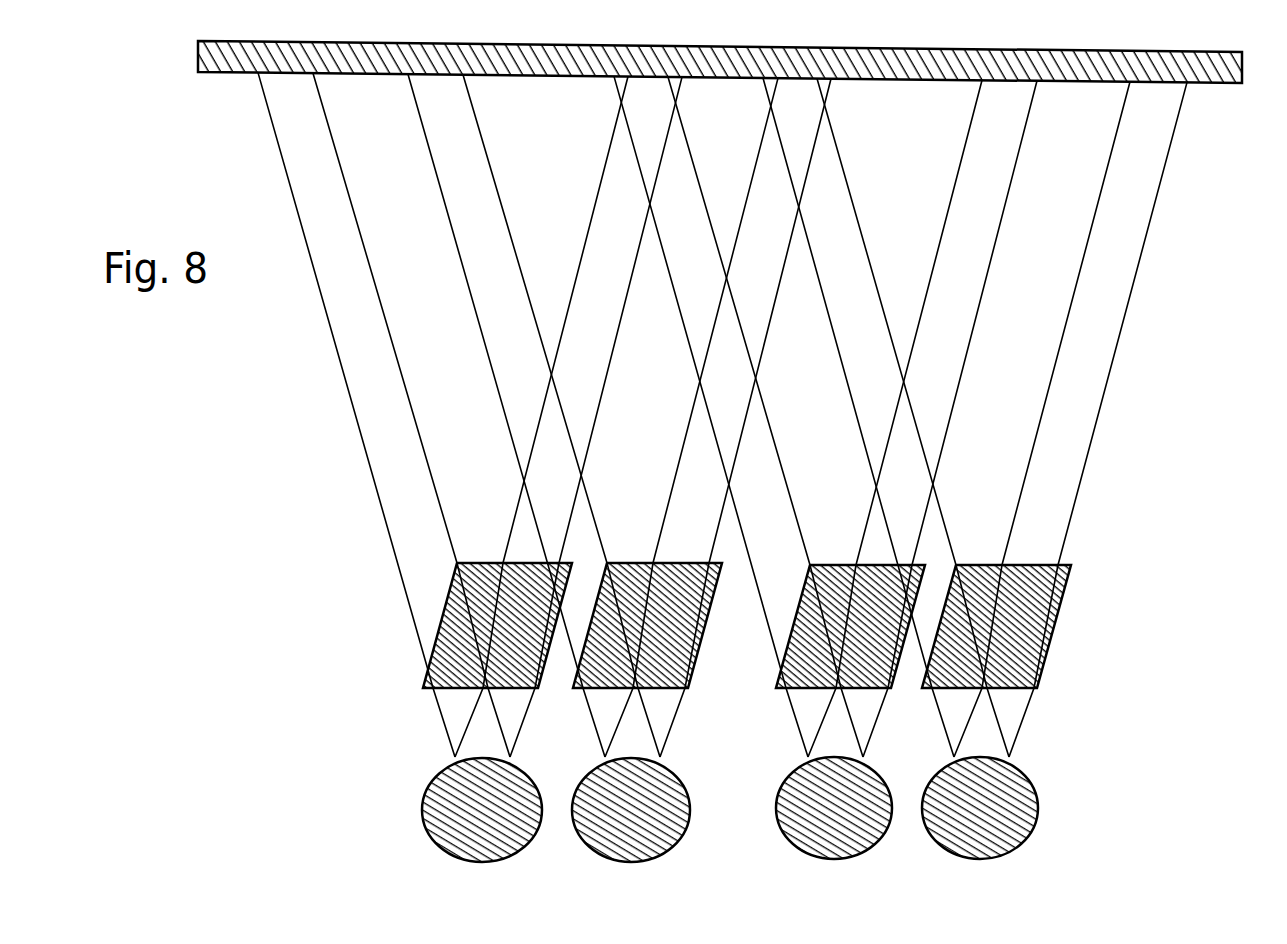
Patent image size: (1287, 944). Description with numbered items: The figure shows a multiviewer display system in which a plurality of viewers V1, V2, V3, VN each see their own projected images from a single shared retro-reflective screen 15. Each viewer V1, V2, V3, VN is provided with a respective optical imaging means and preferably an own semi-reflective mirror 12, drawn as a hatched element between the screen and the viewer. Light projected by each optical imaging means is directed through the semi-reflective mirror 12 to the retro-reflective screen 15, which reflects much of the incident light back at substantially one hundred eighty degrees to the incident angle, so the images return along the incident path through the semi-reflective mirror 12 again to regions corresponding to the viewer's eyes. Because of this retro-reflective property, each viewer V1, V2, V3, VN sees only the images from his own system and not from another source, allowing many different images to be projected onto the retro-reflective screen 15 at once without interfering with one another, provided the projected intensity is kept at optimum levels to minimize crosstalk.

The semi-reflective mirror 12 is at (482, 563).
The retro-reflective screen 15 is at (1227, 85).
The viewer V1 is at (482, 836).
The viewer V2 is at (631, 836).
The viewer V3 is at (834, 835).
The viewer VN is at (980, 835).